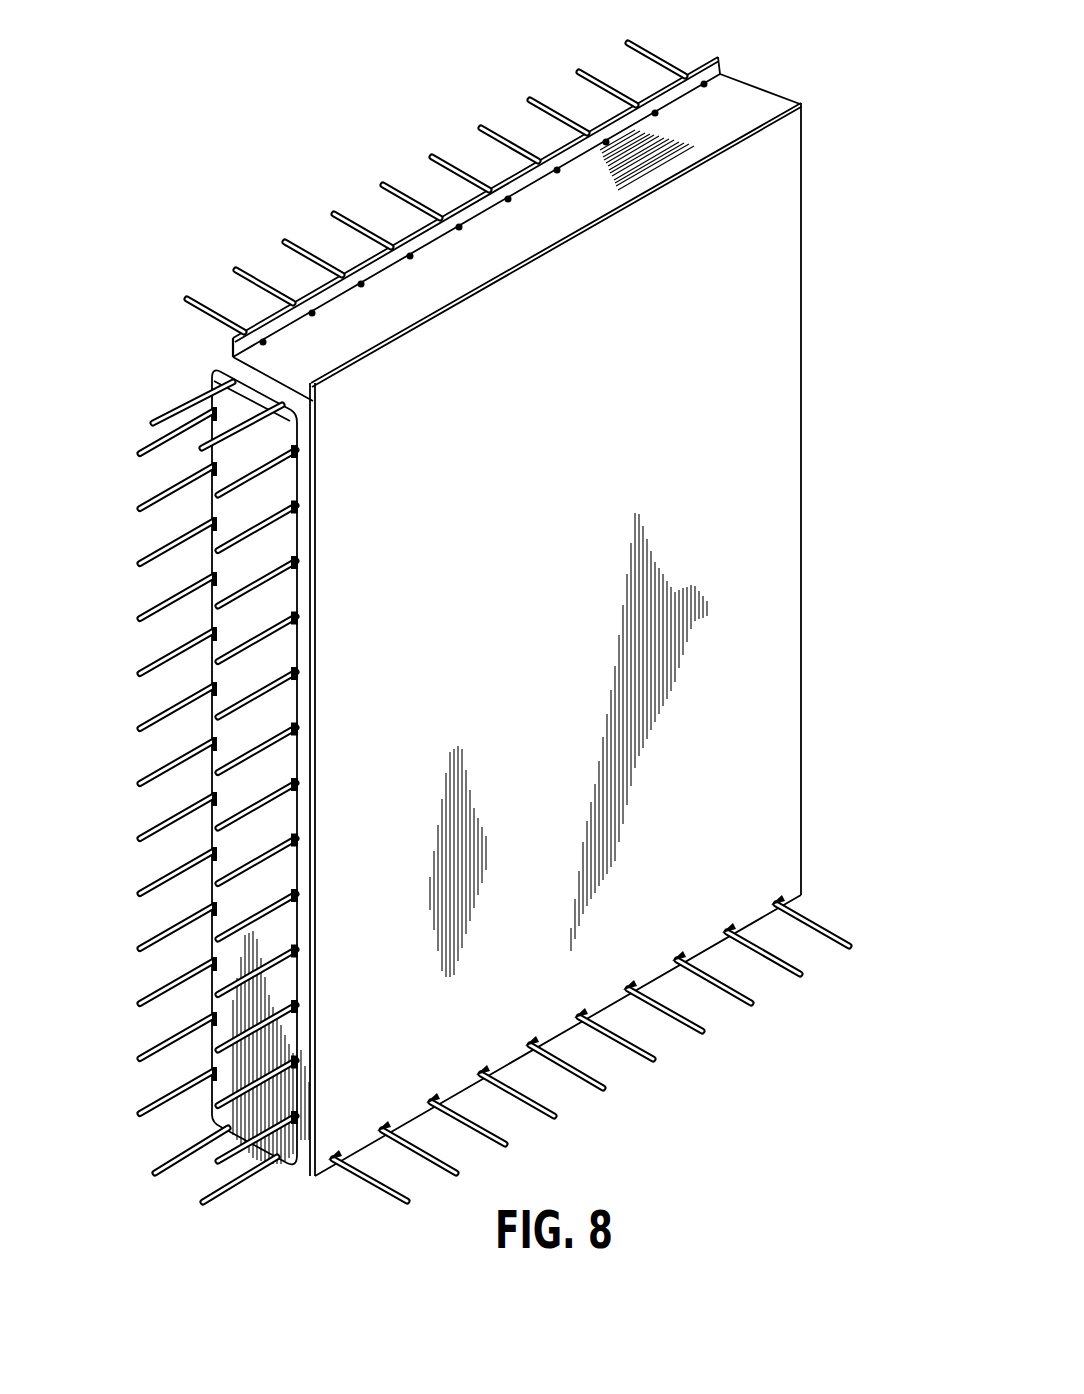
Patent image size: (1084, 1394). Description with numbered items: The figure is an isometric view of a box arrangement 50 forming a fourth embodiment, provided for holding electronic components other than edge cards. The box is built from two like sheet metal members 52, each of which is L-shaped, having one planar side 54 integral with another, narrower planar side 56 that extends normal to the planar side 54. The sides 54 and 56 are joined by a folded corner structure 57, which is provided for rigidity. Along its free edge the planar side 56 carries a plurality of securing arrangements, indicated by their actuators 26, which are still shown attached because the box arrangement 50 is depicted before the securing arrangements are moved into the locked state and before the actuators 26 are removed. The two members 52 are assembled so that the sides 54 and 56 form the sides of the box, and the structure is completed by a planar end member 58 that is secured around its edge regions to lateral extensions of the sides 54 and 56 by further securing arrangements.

The actuator 26 is at (462, 168).
The box arrangement 50 is at (497, 619).
The sheet metal member 52 is at (215, 338).
The planar side 54 is at (727, 398).
The planar side 56 is at (732, 97).
The folded corner structure 57 is at (780, 118).
The planar end member 58 is at (253, 843).